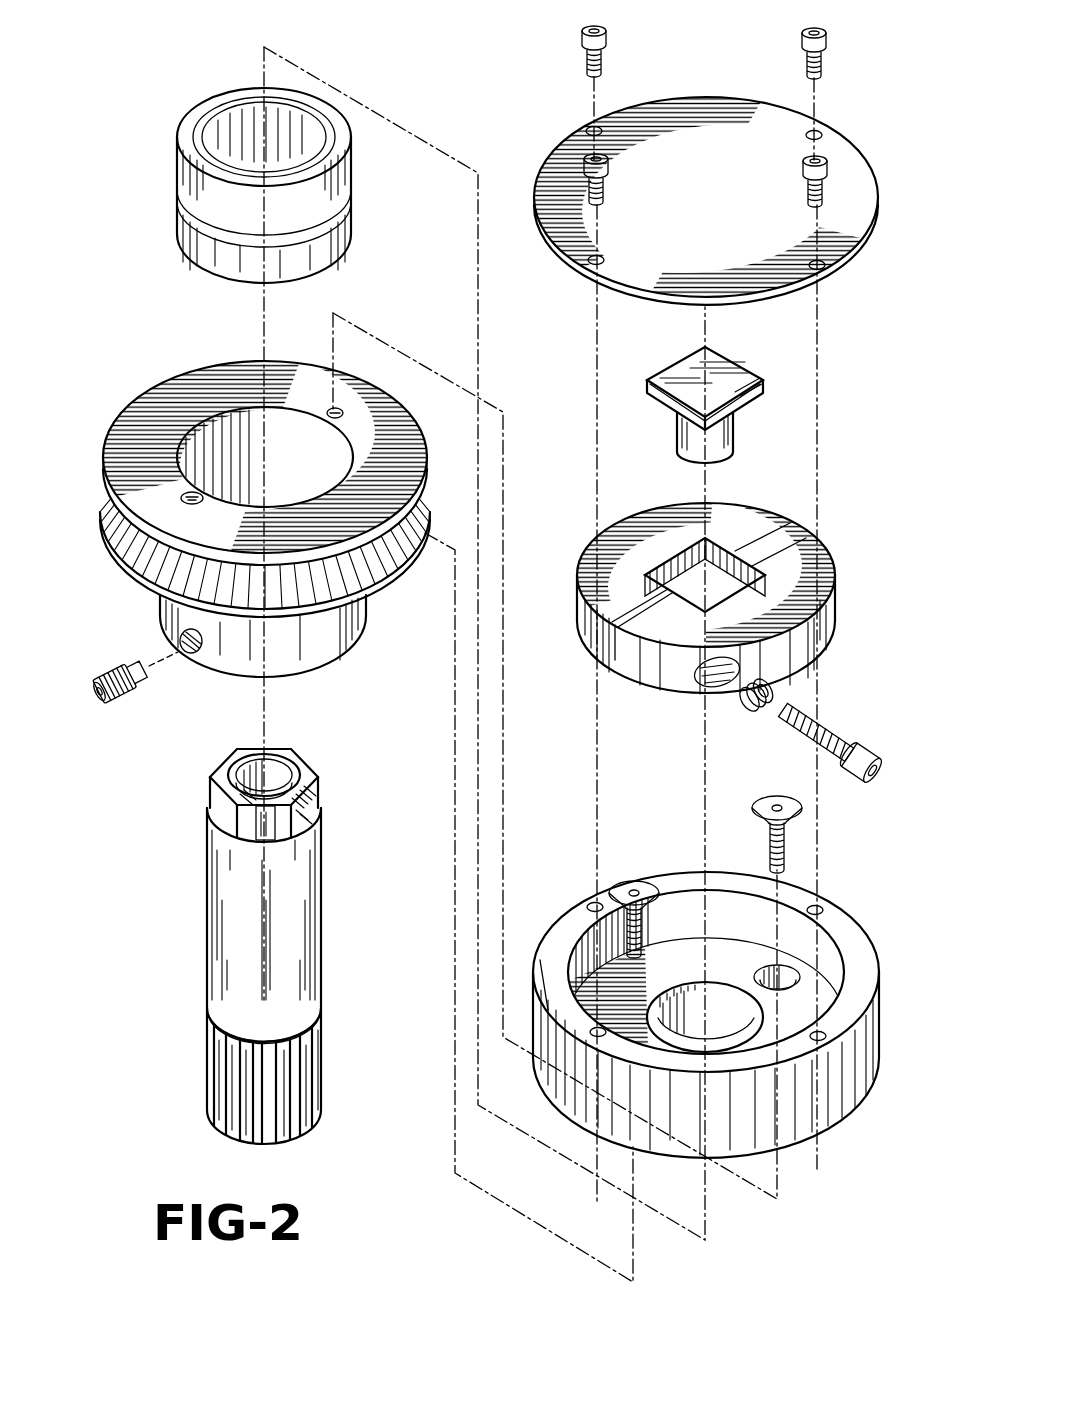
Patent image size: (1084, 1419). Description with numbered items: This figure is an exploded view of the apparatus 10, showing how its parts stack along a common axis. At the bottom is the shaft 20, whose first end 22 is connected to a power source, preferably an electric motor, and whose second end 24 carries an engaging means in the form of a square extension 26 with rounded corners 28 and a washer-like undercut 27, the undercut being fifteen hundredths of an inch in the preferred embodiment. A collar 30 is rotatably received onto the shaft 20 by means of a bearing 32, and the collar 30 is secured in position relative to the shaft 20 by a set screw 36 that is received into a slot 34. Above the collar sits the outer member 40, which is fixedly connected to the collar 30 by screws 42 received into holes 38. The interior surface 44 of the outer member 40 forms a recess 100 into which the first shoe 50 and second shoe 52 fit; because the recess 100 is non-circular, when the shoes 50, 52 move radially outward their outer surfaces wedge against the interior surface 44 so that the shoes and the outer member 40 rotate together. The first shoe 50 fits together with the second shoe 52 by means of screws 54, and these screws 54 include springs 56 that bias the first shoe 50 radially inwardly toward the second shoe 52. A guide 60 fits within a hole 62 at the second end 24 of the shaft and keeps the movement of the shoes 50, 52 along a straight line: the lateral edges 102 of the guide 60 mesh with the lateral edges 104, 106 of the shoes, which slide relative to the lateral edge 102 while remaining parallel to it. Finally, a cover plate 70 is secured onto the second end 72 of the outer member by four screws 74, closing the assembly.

The apparatus 10 is at (460, 98).
The shaft 20 is at (300, 906).
The first end 22 is at (300, 1127).
The second end 24 is at (318, 838).
The square extension 26 is at (312, 778).
The undercut 27 is at (290, 762).
The rounded corners 28 is at (262, 822).
The collar 30 is at (358, 583).
The bearing 32 is at (188, 183).
The slot 34 is at (235, 1038).
The set screw 36 is at (110, 672).
The holes 38 is at (183, 496).
The outer member 40 is at (808, 1120).
The screws 42 is at (787, 845).
The interior surface 44 is at (678, 916).
The first shoe 50 is at (787, 580).
The second shoe 52 is at (658, 548).
The screws 54 is at (828, 740).
The springs 56 is at (778, 693).
The guide 60 is at (686, 367).
The hole 62 is at (247, 772).
The cover plate 70 is at (712, 132).
The second end 72 is at (565, 925).
The screws 74 is at (820, 60).
The recess 100 is at (797, 1025).
The lateral edges 102 is at (752, 378).
The lateral edge 104 is at (800, 537).
The lateral edge 106 is at (724, 552).